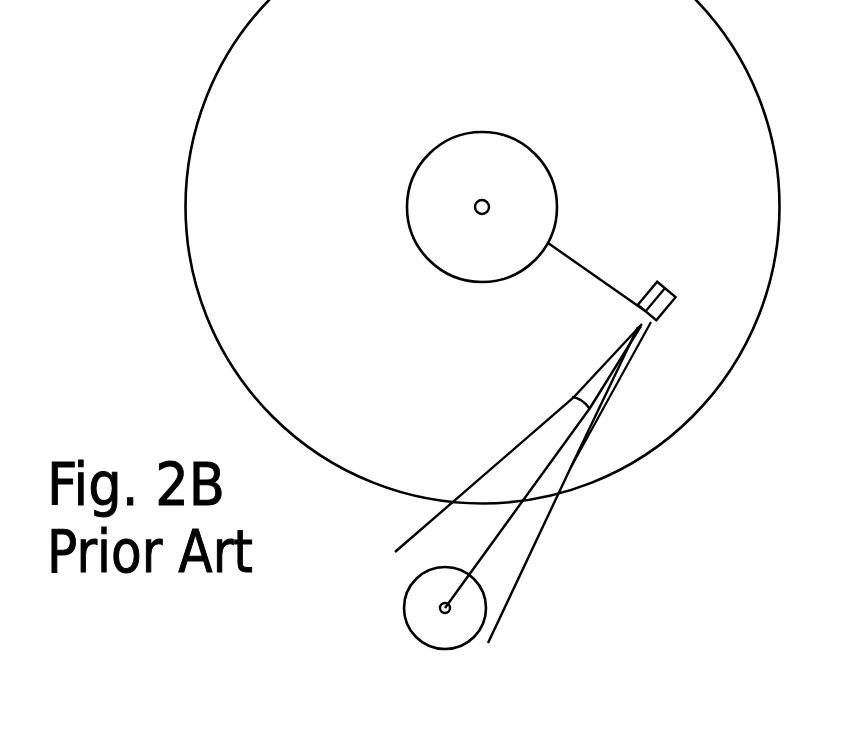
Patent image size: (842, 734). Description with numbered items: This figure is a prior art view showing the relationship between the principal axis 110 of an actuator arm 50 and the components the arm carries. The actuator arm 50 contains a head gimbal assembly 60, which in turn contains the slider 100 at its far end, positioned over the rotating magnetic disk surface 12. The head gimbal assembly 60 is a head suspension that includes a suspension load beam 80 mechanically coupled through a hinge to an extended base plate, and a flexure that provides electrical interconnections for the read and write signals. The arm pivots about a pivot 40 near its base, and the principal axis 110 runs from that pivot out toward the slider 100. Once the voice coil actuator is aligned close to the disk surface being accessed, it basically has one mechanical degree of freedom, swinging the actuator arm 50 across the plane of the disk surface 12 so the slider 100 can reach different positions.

The rotating magnetic disk surface 12 is at (274, 226).
The suspension load beam 80 is at (510, 190).
The slider 100 is at (677, 306).
The principal axis 110 is at (475, 557).
The actuator arm 50 is at (571, 467).
The head gimbal assembly 60 is at (613, 378).
The pivot bearing 40 is at (404, 628).